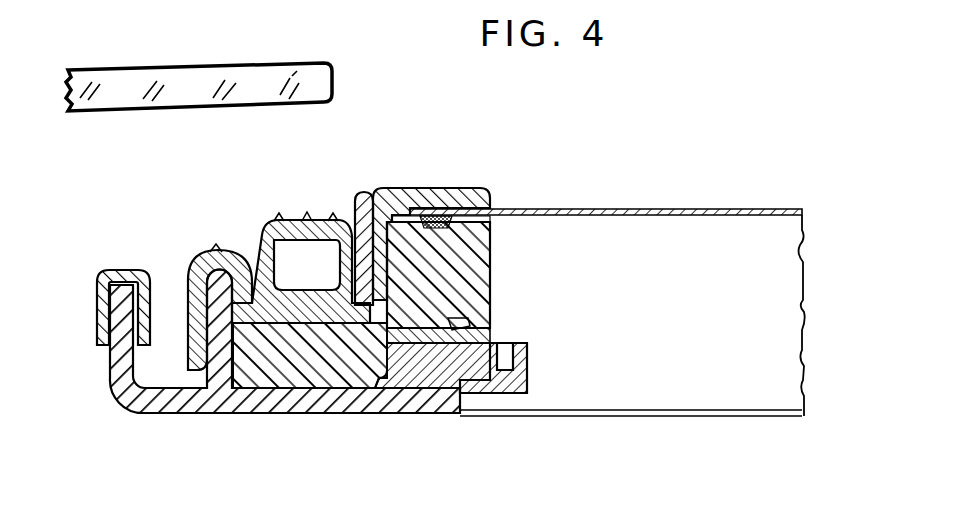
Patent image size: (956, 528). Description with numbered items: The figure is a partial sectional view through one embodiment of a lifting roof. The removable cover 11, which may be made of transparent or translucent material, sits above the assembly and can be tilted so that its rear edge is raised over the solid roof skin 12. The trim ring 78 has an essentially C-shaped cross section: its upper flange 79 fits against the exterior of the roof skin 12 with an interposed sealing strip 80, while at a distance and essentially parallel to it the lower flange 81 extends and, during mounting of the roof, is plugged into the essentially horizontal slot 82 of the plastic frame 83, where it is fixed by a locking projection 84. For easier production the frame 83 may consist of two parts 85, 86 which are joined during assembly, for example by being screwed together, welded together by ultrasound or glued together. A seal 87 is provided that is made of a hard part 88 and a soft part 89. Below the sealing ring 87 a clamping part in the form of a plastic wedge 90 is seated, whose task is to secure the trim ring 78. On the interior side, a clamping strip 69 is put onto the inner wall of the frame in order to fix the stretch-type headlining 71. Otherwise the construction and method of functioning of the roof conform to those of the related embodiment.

The cover 11 is at (205, 82).
The roof skin 12 is at (708, 209).
The clamping strip 69 is at (99, 301).
The stretch-type headlining 71 is at (708, 417).
The trim ring 78 is at (377, 192).
The upper flange 79 is at (461, 190).
The sealing strip 80 is at (436, 208).
The lower flange 81 is at (409, 360).
The slot 82 is at (447, 395).
The plastic frame 83 is at (195, 431).
The locking projection 84 is at (462, 316).
The frame part 85 is at (483, 243).
The frame part 86 is at (256, 400).
The seal 87 is at (245, 214).
The hard part 88 is at (200, 262).
The soft part 89 is at (298, 225).
The plastic wedge 90 is at (318, 352).